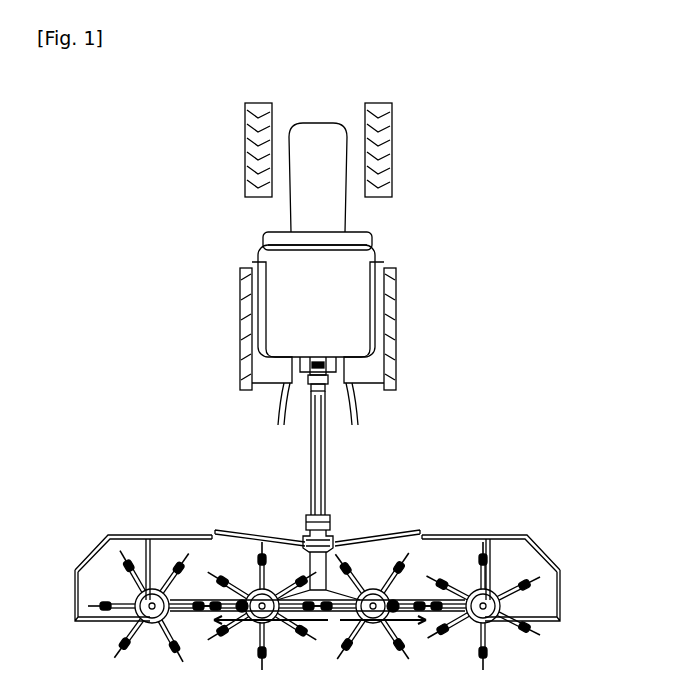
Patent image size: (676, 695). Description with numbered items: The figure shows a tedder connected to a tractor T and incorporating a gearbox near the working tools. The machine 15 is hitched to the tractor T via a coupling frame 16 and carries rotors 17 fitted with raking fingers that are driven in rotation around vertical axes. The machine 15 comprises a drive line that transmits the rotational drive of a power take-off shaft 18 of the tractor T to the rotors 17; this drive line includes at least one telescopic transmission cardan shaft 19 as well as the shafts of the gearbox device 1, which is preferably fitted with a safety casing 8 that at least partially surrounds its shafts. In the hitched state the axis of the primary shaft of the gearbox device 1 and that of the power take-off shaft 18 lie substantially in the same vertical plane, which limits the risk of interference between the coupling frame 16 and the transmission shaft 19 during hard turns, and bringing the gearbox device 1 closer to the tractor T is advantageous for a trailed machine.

The tractor T is at (211, 417).
The gearbox device 1 is at (307, 537).
The safety casing 8 is at (318, 543).
The machine 15 is at (423, 429).
The coupling frame 16 is at (294, 434).
The rotors 17 is at (143, 524).
The power take-off shaft 18 is at (324, 368).
The telescopic transmission cardan shaft 19 is at (323, 467).